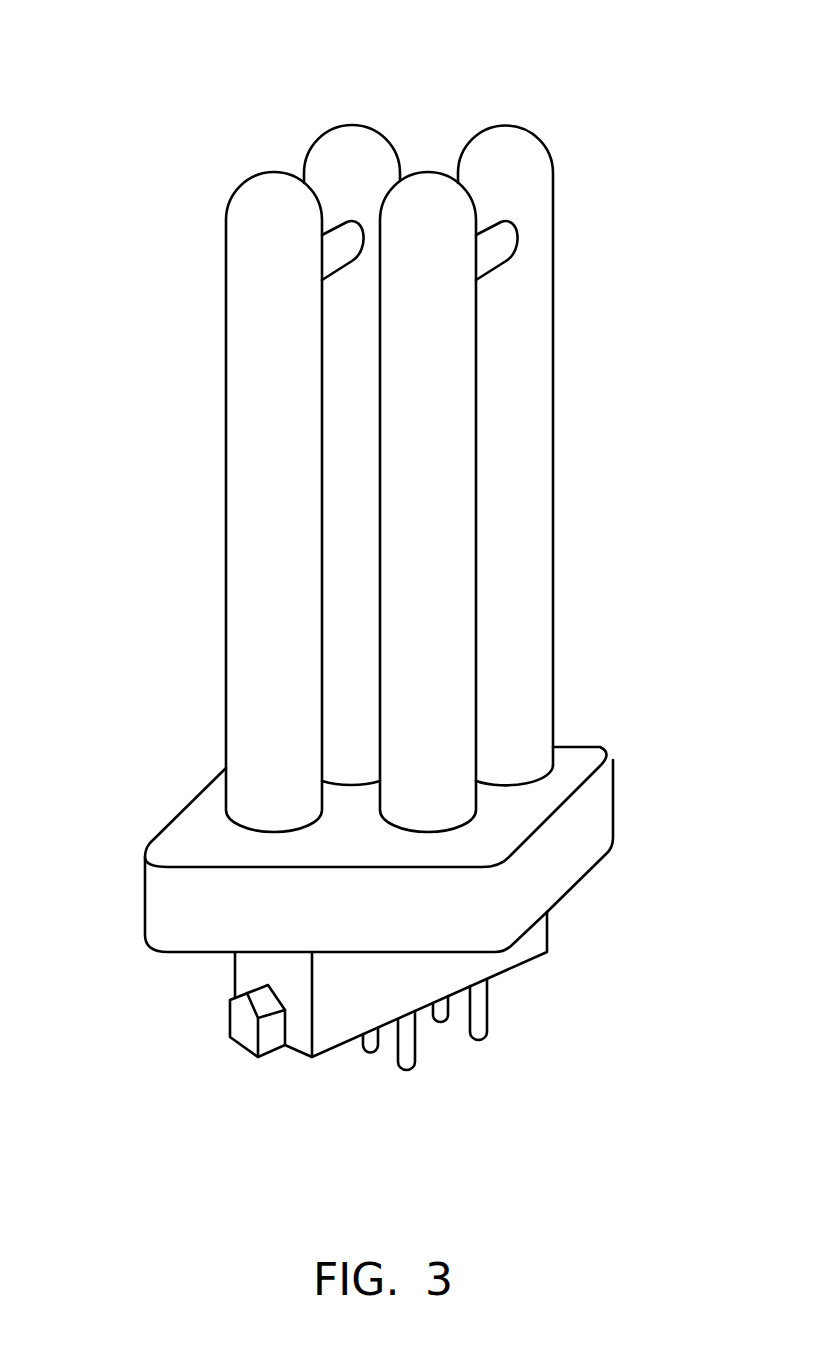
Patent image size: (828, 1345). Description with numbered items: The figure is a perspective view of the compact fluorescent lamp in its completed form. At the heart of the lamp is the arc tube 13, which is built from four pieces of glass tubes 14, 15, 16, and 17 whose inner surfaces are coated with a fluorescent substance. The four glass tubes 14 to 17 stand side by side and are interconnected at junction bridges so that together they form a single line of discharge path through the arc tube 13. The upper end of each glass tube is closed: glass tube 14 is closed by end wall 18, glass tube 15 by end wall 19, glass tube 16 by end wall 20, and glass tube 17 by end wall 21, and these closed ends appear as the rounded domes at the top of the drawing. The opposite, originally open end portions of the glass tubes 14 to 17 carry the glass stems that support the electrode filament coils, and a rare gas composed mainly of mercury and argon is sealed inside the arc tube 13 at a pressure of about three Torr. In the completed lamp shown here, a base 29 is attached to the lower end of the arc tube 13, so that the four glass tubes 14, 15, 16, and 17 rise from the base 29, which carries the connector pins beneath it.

The arc tube 13 is at (128, 130).
The glass tube 14 is at (236, 432).
The glass tube 15 is at (337, 542).
The glass tube 16 is at (542, 348).
The glass tube 17 is at (460, 538).
The end wall 18 is at (275, 172).
The end wall 19 is at (355, 125).
The end wall 20 is at (505, 125).
The end wall 21 is at (427, 172).
The base 29 is at (607, 817).